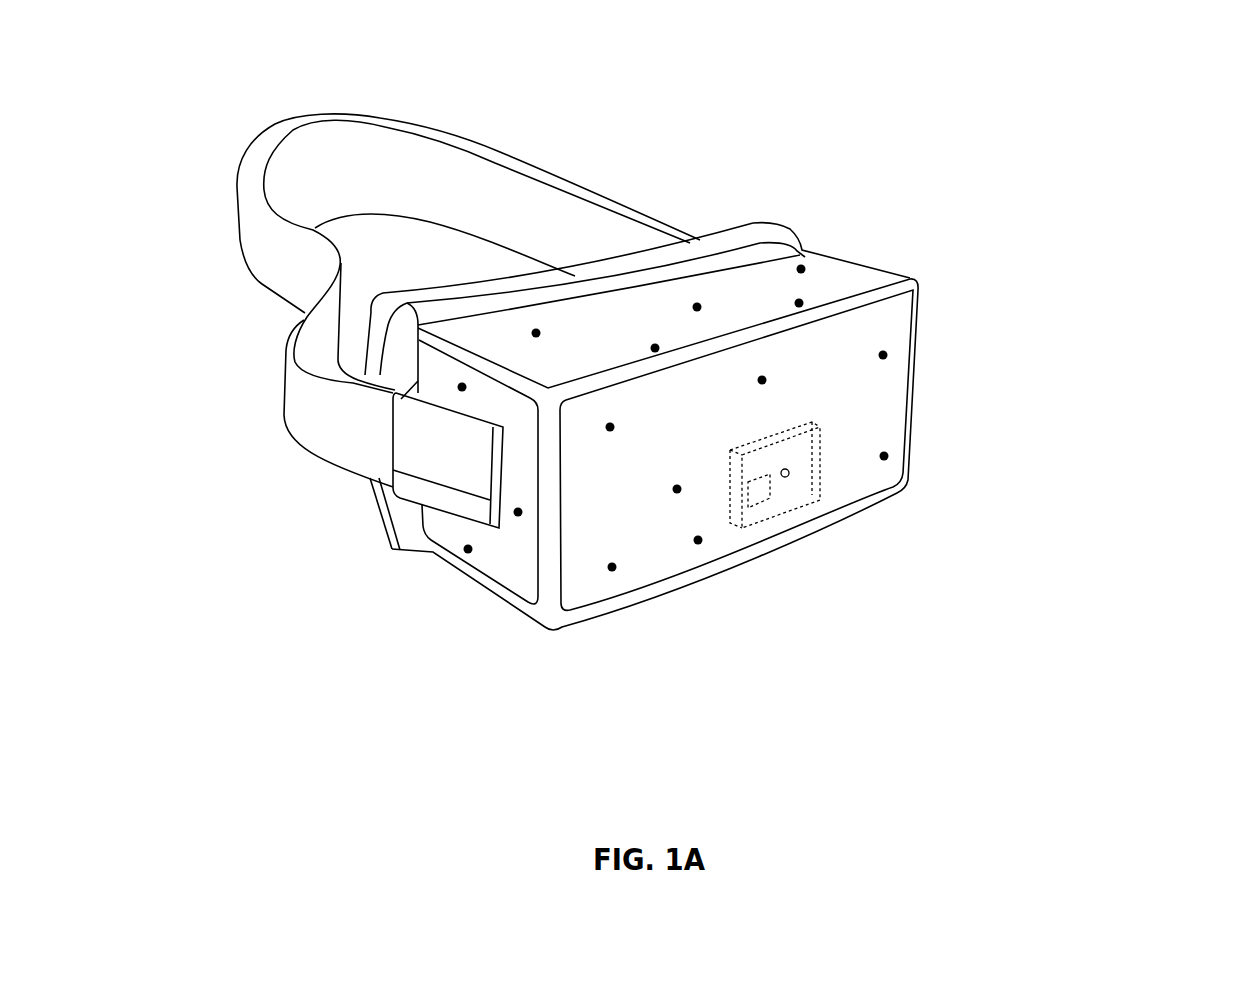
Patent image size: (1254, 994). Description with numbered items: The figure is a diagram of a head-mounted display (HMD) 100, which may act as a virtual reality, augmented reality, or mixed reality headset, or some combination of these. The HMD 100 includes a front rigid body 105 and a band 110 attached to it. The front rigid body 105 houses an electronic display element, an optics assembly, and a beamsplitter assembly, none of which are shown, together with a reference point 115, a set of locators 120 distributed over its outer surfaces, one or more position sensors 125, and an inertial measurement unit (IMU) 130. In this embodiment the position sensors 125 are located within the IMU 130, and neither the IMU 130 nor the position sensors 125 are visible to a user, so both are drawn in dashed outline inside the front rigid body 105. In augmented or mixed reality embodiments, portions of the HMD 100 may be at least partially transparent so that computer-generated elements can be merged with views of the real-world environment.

The head-mounted display (HMD) 100 is at (120, 31).
The front rigid body 105 is at (919, 276).
The band 110 is at (587, 189).
The reference point 115 is at (790, 480).
The locators 120 is at (890, 458).
The position sensors 125 is at (758, 493).
The inertial measurement unit (IMU) 130 is at (822, 472).